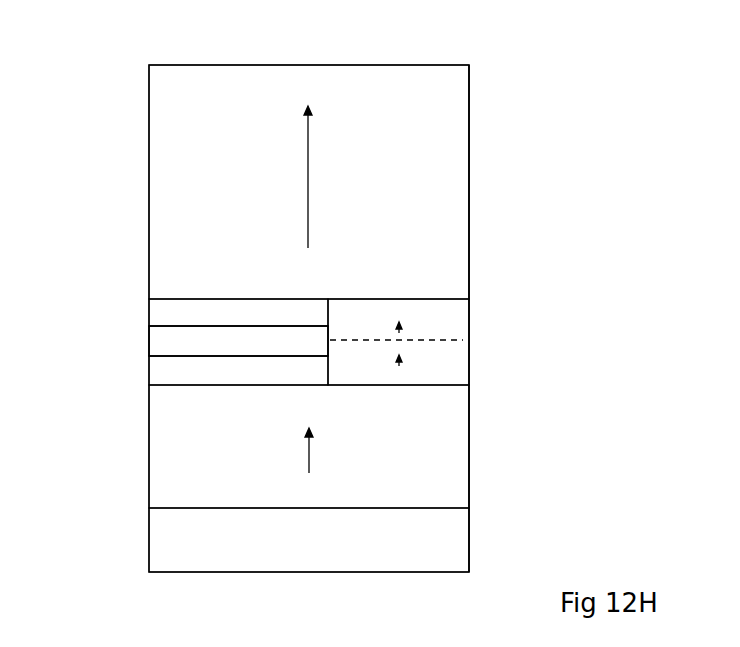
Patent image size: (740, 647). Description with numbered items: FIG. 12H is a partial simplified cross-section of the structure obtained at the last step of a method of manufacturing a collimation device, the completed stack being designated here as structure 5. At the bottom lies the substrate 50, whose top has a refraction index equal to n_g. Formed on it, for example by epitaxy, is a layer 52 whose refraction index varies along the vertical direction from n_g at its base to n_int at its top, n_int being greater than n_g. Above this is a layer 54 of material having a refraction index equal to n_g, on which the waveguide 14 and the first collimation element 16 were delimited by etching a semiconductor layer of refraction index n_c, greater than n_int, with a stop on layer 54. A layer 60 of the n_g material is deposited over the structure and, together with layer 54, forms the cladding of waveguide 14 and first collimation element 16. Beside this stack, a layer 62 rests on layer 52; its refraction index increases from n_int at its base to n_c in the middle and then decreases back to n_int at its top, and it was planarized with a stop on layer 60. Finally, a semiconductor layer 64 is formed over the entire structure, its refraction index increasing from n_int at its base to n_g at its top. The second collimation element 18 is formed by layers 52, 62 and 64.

The semiconductor device 5 is at (497, 60).
The waveguide 14 is at (148, 343).
The first collimation element 16 is at (194, 339).
The second collimation element 18 is at (470, 230).
The substrate 50 is at (470, 538).
The layer 52 is at (470, 440).
The layer 54 is at (148, 376).
The layer 60 is at (148, 313).
The layer 62 is at (470, 323).
The semiconductor layer 64 is at (470, 152).